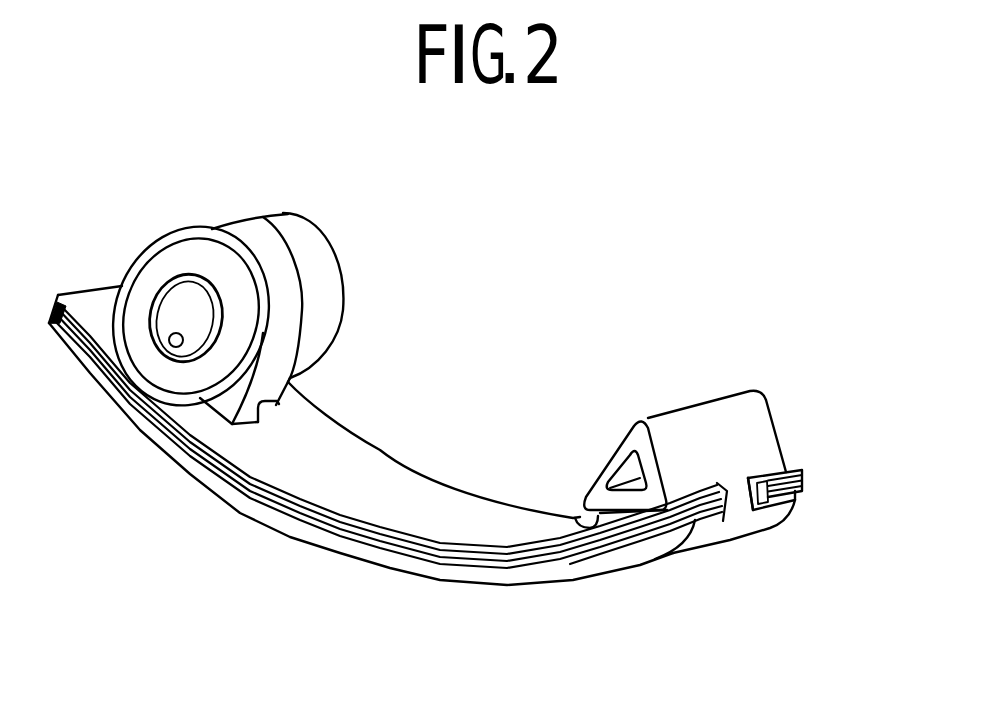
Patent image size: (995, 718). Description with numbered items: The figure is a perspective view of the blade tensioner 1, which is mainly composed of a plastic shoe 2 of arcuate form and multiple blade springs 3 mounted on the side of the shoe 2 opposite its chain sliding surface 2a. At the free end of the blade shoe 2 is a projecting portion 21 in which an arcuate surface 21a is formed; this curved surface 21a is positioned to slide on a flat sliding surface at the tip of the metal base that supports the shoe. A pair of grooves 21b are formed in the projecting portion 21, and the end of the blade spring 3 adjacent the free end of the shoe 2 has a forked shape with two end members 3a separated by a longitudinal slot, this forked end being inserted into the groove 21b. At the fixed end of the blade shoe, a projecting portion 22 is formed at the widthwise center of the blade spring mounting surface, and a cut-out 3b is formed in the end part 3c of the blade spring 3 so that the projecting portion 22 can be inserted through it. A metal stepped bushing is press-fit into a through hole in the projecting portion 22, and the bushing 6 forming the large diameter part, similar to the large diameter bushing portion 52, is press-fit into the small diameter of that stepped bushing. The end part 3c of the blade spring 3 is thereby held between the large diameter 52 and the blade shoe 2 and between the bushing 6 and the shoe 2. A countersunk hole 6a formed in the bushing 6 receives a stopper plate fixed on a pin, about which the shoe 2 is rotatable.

The blade tensioner 1 is at (541, 308).
The plastic shoe 2 is at (389, 499).
The chain sliding surface 2a is at (248, 515).
The blade spring 3 is at (469, 384).
The end member 3a is at (804, 471).
The cut-out 3b is at (279, 403).
The end part 3c is at (93, 301).
The bushing 6 is at (180, 308).
The countersunk hole 6a is at (178, 350).
The projecting portion 21 is at (673, 473).
The arcuate surface 21a is at (617, 430).
The groove 21b is at (573, 510).
The projecting portion 22 is at (270, 252).
The large diameter bushing portion 52 is at (328, 313).